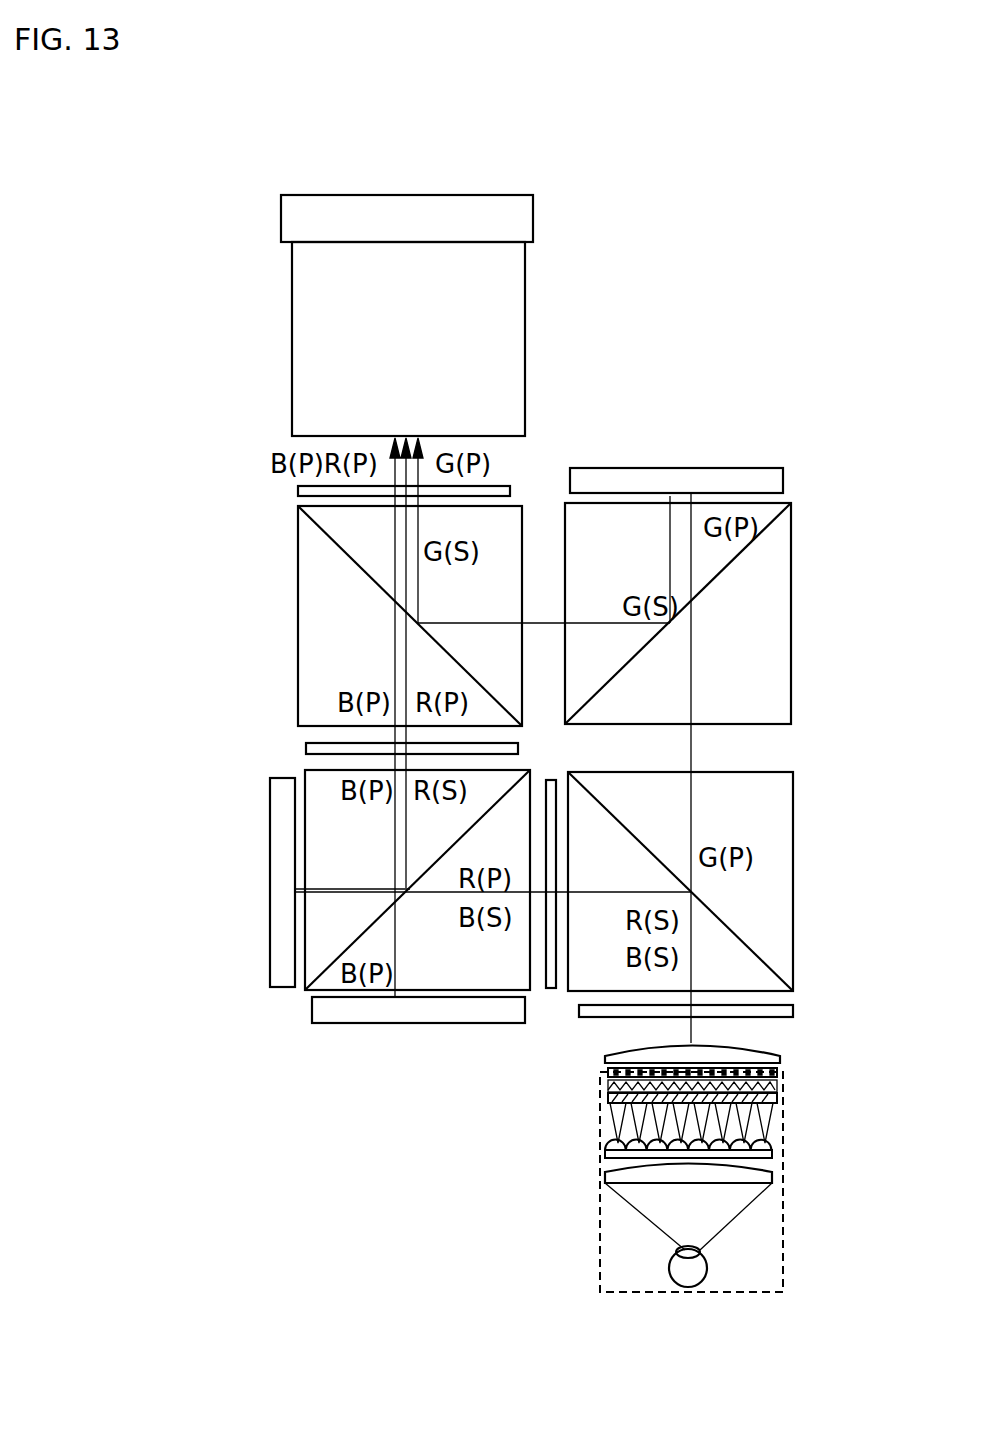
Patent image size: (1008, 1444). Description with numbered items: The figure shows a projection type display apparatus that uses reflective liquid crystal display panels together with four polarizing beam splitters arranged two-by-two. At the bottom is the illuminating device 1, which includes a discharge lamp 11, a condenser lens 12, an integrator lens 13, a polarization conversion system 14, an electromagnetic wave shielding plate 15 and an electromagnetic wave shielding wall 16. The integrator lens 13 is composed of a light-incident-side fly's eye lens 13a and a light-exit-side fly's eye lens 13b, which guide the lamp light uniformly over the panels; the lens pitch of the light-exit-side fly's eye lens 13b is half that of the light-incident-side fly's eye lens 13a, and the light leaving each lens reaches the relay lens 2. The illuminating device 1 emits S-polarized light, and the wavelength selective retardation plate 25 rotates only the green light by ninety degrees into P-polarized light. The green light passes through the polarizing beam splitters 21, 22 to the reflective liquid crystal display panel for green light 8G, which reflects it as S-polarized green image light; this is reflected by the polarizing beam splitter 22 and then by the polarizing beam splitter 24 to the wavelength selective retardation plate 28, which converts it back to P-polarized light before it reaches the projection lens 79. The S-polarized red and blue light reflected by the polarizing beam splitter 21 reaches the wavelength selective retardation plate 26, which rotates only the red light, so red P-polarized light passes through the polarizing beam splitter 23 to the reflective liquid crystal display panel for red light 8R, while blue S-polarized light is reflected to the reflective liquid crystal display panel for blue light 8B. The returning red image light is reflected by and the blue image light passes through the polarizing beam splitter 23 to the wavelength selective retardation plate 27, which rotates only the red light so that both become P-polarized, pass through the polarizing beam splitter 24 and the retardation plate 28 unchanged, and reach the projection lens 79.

The projection lens 79 is at (504, 306).
The wavelength selective retardation plate 28 is at (298, 491).
The polarizing beam splitter 24 is at (303, 600).
The reflective liquid crystal display panel for green light 8G is at (680, 468).
The polarizing beam splitter 22 is at (783, 600).
The wavelength selective retardation plate 27 is at (306, 748).
The polarizing beam splitter 23 is at (305, 773).
The reflective liquid crystal display panel for red light 8R is at (278, 882).
The reflective liquid crystal display panel for blue light 8B is at (401, 1022).
The wavelength selective retardation plate 26 is at (548, 1005).
The polarizing beam splitter 21 is at (783, 831).
The wavelength selective retardation plate 25 is at (793, 1011).
The relay lens 2 is at (605, 1062).
The electromagnetic wave shielding wall 16 is at (785, 1260).
The electromagnetic wave shielding plate 15 is at (780, 1070).
The light-exit-side fly's eye lens 13b is at (608, 1087).
The polarization conversion system 14 is at (778, 1100).
The light-incident-side fly's eye lens 13a is at (605, 1152).
The integrator lens 13 is at (527, 1065).
The condenser lens 12 is at (605, 1178).
The discharge lamp 11 is at (680, 1275).
The illuminating device 1 is at (850, 1106).